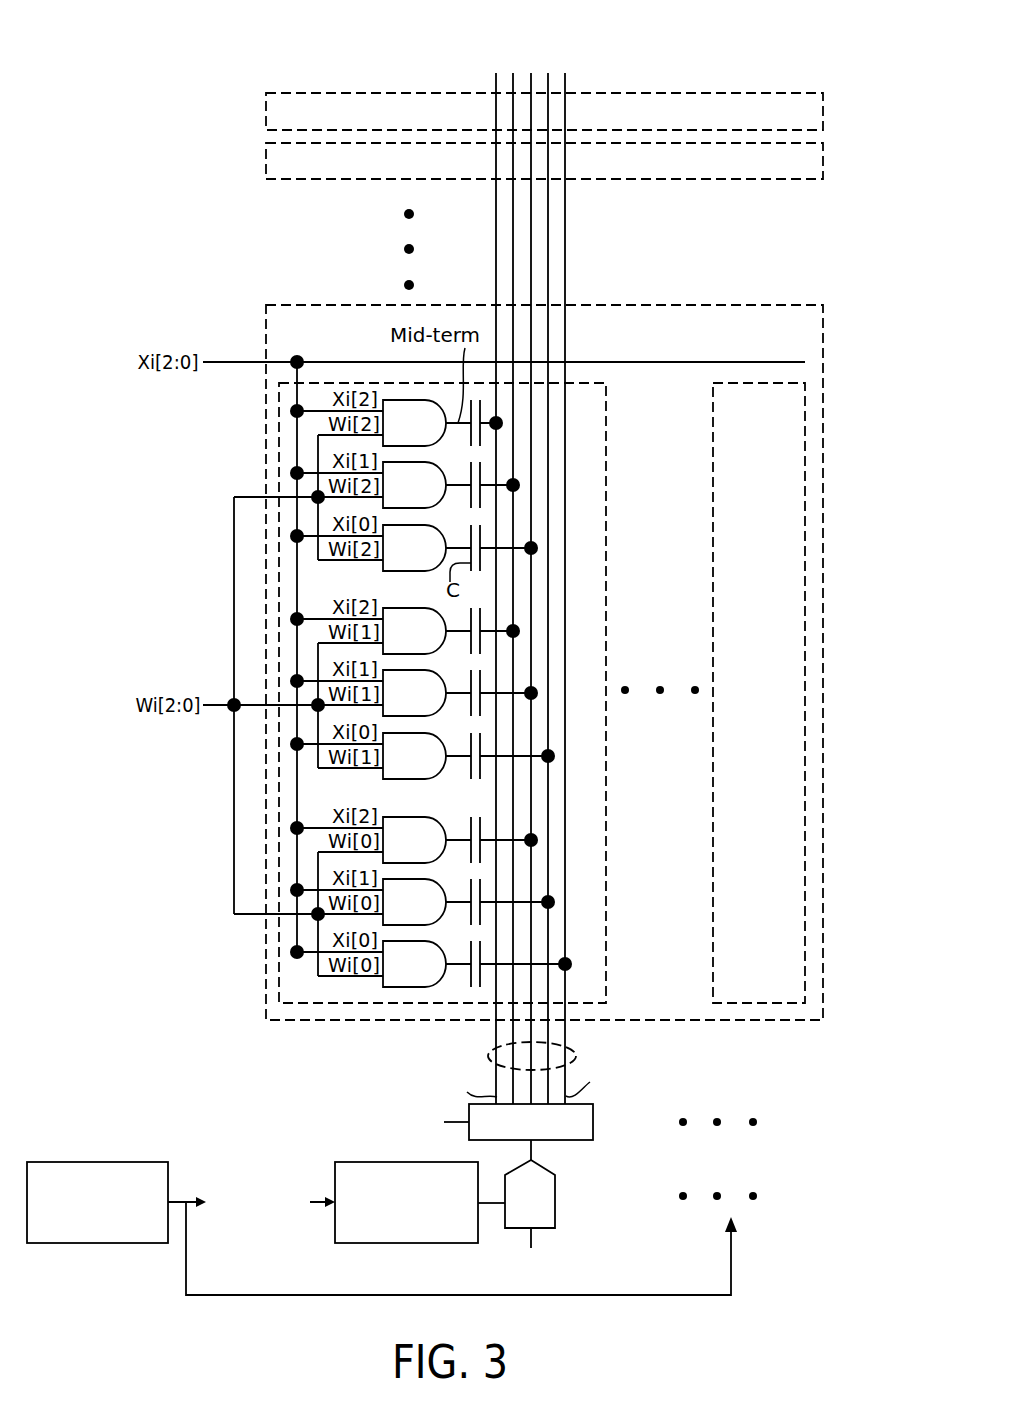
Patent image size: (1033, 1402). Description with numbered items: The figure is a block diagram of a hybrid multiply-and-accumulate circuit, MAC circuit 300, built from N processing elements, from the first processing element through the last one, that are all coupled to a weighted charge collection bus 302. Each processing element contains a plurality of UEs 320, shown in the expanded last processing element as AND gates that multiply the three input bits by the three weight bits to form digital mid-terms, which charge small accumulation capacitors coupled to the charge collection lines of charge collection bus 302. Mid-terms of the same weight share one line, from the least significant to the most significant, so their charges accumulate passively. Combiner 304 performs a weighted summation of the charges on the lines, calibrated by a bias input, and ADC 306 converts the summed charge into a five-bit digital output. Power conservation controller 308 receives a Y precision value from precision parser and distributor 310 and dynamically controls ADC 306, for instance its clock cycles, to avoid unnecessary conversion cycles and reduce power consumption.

The MAC circuit 300 is at (88, 52).
The charge collection bus 302 is at (577, 1052).
The combiner 304 is at (593, 1140).
The ADC 306 is at (555, 1207).
The power conservation controller 308 is at (335, 1162).
The precision parser and distributor 310 is at (168, 1162).
The UEs 320 is at (606, 497).